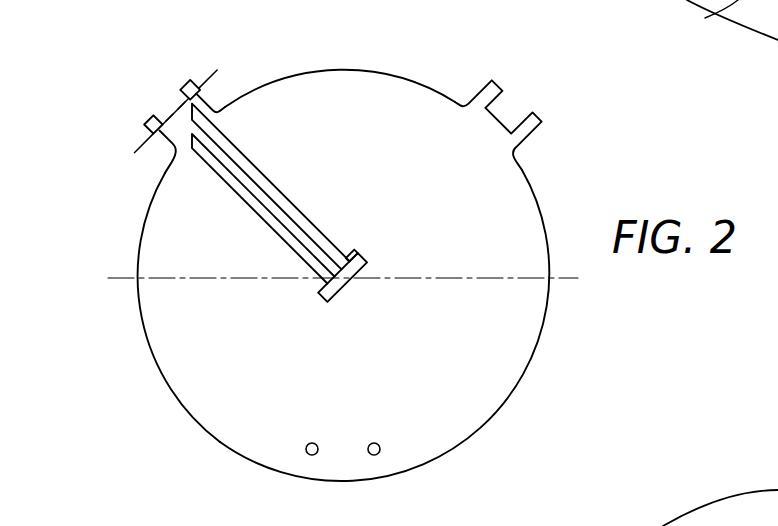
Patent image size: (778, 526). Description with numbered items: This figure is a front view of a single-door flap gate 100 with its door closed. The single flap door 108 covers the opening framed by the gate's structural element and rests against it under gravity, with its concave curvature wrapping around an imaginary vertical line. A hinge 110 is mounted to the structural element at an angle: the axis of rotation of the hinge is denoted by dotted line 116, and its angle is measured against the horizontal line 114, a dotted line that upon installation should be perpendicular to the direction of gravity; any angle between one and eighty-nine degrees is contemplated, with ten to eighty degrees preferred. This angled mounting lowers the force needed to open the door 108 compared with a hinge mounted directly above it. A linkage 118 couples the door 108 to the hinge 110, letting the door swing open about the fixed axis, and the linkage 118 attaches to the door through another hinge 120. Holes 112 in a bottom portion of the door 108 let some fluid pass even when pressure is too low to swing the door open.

The single-door flap gate 100 is at (572, 180).
The flap door 108 is at (226, 433).
The hinge 110 is at (152, 117).
The holes 112 is at (368, 457).
The horizontal line 114 is at (565, 280).
The axis of rotation of the hinge 116 is at (208, 72).
The linkage 118 is at (245, 157).
The hinge 120 is at (358, 258).